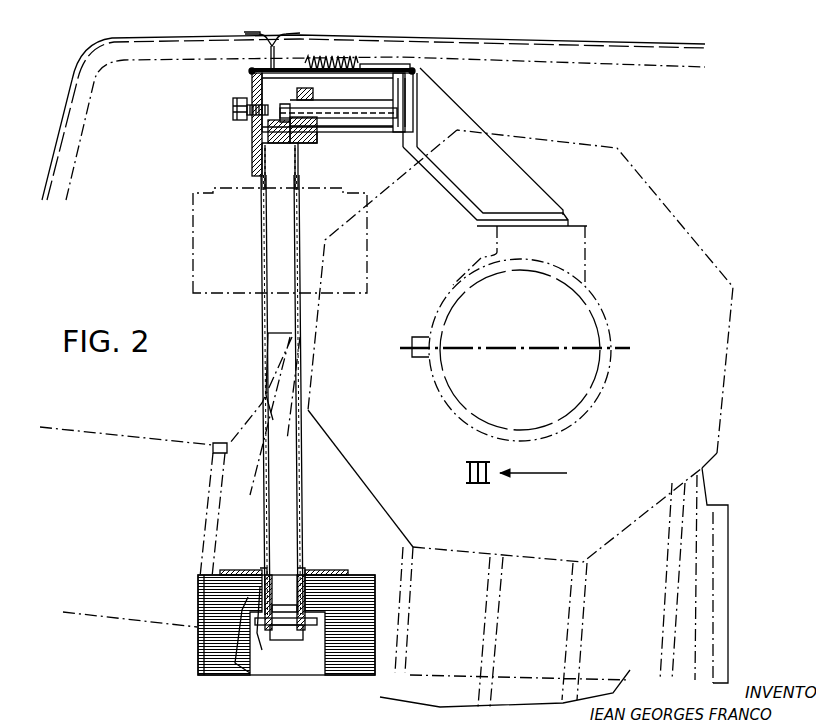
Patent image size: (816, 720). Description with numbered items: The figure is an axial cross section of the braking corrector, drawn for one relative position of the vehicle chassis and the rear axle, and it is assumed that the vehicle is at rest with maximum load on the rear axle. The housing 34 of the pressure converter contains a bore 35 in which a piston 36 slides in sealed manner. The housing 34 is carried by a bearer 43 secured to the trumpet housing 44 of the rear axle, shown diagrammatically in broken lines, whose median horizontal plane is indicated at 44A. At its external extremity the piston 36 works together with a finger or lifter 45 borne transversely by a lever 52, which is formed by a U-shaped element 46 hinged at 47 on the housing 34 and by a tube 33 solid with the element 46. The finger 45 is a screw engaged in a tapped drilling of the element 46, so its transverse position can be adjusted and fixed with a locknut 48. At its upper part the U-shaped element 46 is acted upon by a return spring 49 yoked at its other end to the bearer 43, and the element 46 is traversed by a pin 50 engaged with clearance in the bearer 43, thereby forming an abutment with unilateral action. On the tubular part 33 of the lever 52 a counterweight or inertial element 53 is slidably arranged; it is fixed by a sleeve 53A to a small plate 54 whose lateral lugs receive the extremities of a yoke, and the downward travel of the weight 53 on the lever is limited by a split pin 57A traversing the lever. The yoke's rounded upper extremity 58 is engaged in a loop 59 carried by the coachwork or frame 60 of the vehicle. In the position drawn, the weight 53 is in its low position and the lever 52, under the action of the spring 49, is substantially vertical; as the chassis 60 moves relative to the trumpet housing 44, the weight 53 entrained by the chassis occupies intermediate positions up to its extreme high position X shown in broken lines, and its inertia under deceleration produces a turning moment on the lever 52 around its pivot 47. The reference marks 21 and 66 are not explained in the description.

The rod holding device 21 is at (355, 164).
The tube 33 is at (262, 331).
The housing 34 is at (332, 105).
The bore 35 is at (318, 119).
The piston 36 is at (294, 140).
The bearer 43 is at (462, 212).
The trumpet housing 44 is at (606, 299).
The median horizontal plane 44A is at (525, 346).
The finger or lifter 45 is at (262, 116).
The U-shaped element 46 is at (252, 90).
The hinge 47 is at (278, 133).
The locknut 48 is at (233, 119).
The return spring 49 is at (342, 60).
The pin 50 is at (381, 77).
The lever 52 is at (261, 367).
The counterweight or inertial element 53 is at (197, 647).
The sleeve 53A is at (313, 574).
The small plate 54 is at (240, 556).
The split pin 57A is at (293, 643).
The upper extremity of yoke 58 is at (281, 27).
The loop 59 is at (255, 30).
The coachwork or frame 60 is at (148, 64).
The direction of movement 66 is at (172, 425).
The extreme high position X is at (200, 233).